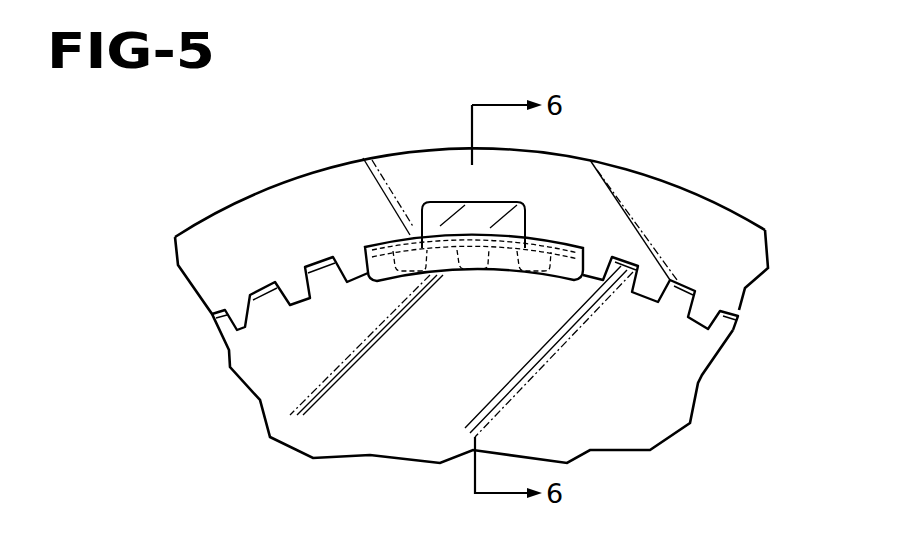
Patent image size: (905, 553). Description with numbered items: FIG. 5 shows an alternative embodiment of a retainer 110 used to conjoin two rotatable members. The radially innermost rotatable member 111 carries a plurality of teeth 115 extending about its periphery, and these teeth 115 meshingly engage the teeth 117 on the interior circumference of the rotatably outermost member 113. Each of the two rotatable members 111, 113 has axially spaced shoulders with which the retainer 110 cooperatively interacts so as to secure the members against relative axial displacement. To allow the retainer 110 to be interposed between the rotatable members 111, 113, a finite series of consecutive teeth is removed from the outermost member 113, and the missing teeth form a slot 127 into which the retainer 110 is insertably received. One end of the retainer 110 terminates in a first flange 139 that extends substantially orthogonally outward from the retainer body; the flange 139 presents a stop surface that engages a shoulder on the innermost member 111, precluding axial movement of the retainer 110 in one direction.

The retainer 110 is at (447, 292).
The inner rotatable member 111 is at (636, 441).
The outer rotatable member 113 is at (652, 158).
The teeth 115 is at (673, 300).
The teeth 117 is at (298, 284).
The slot 127 is at (590, 247).
The first flange 139 is at (497, 258).